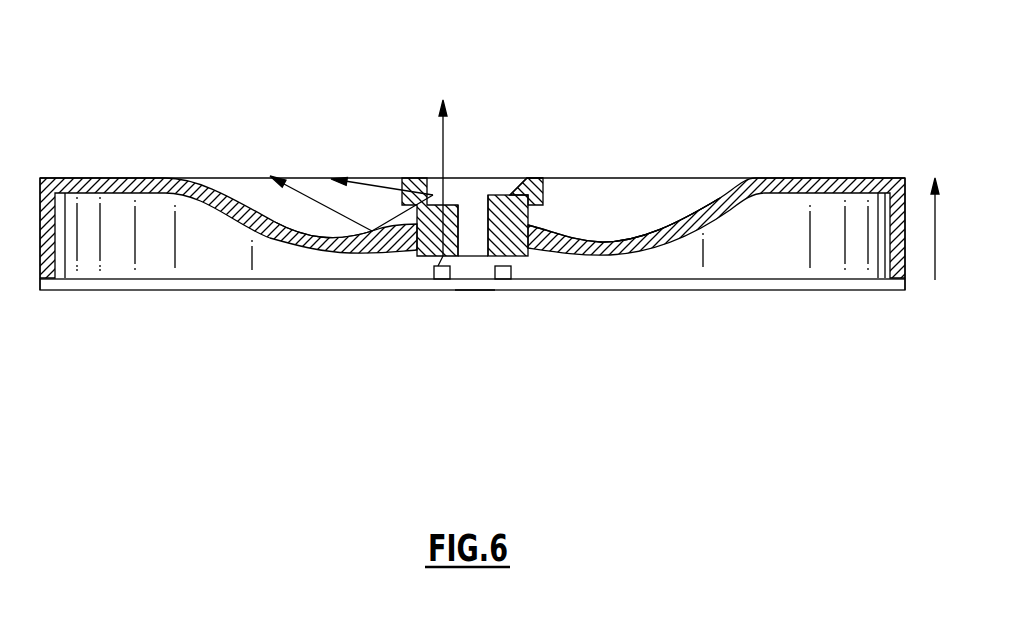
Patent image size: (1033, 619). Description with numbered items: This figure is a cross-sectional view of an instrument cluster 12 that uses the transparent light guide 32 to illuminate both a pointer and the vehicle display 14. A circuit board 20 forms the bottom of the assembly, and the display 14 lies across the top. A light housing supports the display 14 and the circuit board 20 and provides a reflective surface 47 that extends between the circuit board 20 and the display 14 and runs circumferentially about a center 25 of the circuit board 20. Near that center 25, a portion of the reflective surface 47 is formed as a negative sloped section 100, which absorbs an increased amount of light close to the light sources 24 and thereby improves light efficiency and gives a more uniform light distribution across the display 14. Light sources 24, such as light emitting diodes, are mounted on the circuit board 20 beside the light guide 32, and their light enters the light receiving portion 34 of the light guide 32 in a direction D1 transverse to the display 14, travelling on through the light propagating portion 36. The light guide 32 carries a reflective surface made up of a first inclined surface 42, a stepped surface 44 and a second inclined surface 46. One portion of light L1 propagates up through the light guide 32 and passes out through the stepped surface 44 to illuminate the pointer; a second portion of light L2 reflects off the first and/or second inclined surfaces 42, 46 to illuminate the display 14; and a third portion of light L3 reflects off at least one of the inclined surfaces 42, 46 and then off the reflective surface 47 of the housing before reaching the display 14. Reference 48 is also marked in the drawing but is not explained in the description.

The instrument cluster 12 is at (321, 84).
The vehicle display 14 is at (668, 178).
The circuit board 20 is at (238, 283).
The light source 24 is at (442, 272).
The center of the circuit board 25 is at (475, 304).
The light guide 32 is at (550, 160).
The light receiving portion 34 is at (528, 248).
The light propagating portion 36 is at (563, 178).
The first inclined surface 42 is at (456, 195).
The stepped surface 44 is at (500, 195).
The second inclined surface 46 is at (427, 178).
The reflective surface 47 is at (645, 218).
The reflector 48 is at (395, 268).
The negative sloped section 100 is at (573, 232).
The portion of the light L1 is at (442, 148).
The second portion of light L2 is at (370, 178).
The third portion of the light L3 is at (297, 178).
The direction D1 is at (936, 245).